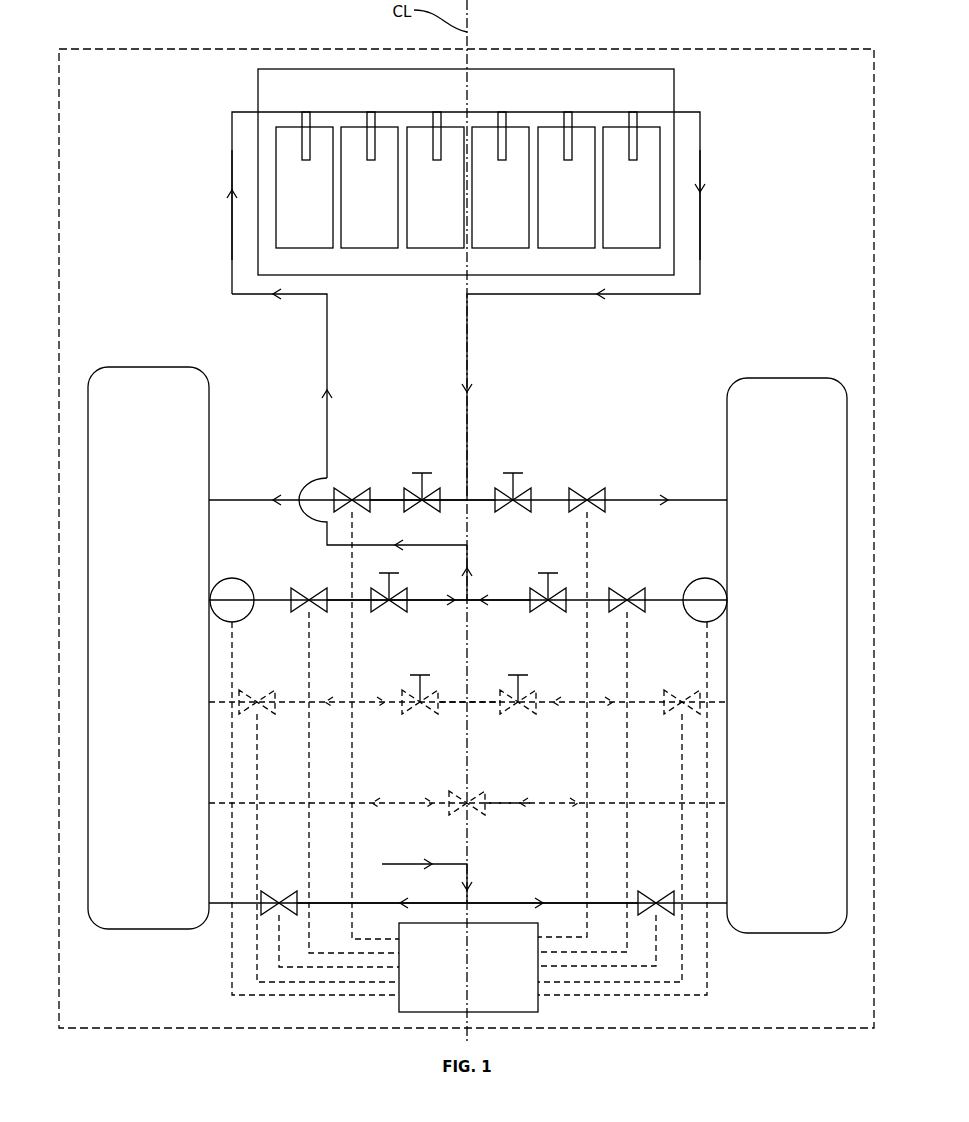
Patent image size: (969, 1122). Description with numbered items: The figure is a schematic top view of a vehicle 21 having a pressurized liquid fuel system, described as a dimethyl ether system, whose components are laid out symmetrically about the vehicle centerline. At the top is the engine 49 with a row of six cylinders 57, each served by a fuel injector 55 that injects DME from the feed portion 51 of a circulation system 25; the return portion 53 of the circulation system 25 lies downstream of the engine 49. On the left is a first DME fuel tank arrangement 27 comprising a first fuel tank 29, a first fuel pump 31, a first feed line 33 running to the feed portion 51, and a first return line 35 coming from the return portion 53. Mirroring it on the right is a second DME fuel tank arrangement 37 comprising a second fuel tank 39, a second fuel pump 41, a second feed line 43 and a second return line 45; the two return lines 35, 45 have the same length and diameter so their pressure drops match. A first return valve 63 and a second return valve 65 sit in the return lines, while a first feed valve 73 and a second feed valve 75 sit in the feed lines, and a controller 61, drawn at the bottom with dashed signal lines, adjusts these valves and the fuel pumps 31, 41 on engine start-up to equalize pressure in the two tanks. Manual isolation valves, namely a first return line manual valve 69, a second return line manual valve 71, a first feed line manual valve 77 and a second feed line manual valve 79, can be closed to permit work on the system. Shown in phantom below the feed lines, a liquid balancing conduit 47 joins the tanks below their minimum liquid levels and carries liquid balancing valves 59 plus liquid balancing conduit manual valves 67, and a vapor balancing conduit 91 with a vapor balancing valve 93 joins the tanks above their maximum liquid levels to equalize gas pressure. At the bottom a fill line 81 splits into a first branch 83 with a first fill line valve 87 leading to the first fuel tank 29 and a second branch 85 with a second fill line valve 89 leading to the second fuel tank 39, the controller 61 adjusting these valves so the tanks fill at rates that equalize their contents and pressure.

The vehicle 21 is at (794, 131).
The circulation system 25 is at (230, 276).
The first DME fuel tank arrangement 27 is at (243, 462).
The first fuel tank 29 is at (139, 461).
The first fuel pump 31 is at (250, 582).
The first feed line 33 is at (458, 603).
The first return line 35 is at (455, 497).
The second DME fuel tank arrangement 37 is at (672, 462).
The second fuel tank 39 is at (778, 471).
The second fuel pump 41 is at (690, 581).
The second feed line 43 is at (474, 603).
The second return line 45 is at (483, 497).
The liquid balancing conduit 47 is at (462, 706).
The engine 49 is at (589, 104).
The feed portion 51 is at (232, 218).
The return portion 53 is at (700, 233).
The fuel injector 55 is at (303, 155).
The cylinder 57 is at (295, 229).
The liquid balancing valve 59 is at (262, 692).
The controller 61 is at (458, 1007).
The first return valve 63 is at (352, 489).
The second return valve 65 is at (590, 489).
The liquid balancing conduit manual valve 67 is at (405, 690).
The first return line manual valve 69 is at (411, 490).
The second return line manual valve 71 is at (528, 490).
The first feed valve 73 is at (292, 590).
The second feed valve 75 is at (642, 590).
The first feed line manual valve 77 is at (406, 597).
The second feed line manual valve 79 is at (530, 597).
The fill line 81 is at (472, 879).
The first branch 83 is at (430, 902).
The second branch 85 is at (513, 902).
The first fill line valve 87 is at (293, 892).
The second fill line valve 89 is at (643, 892).
The vapor balancing conduit 91 is at (498, 801).
The vapor balancing valve 93 is at (451, 791).